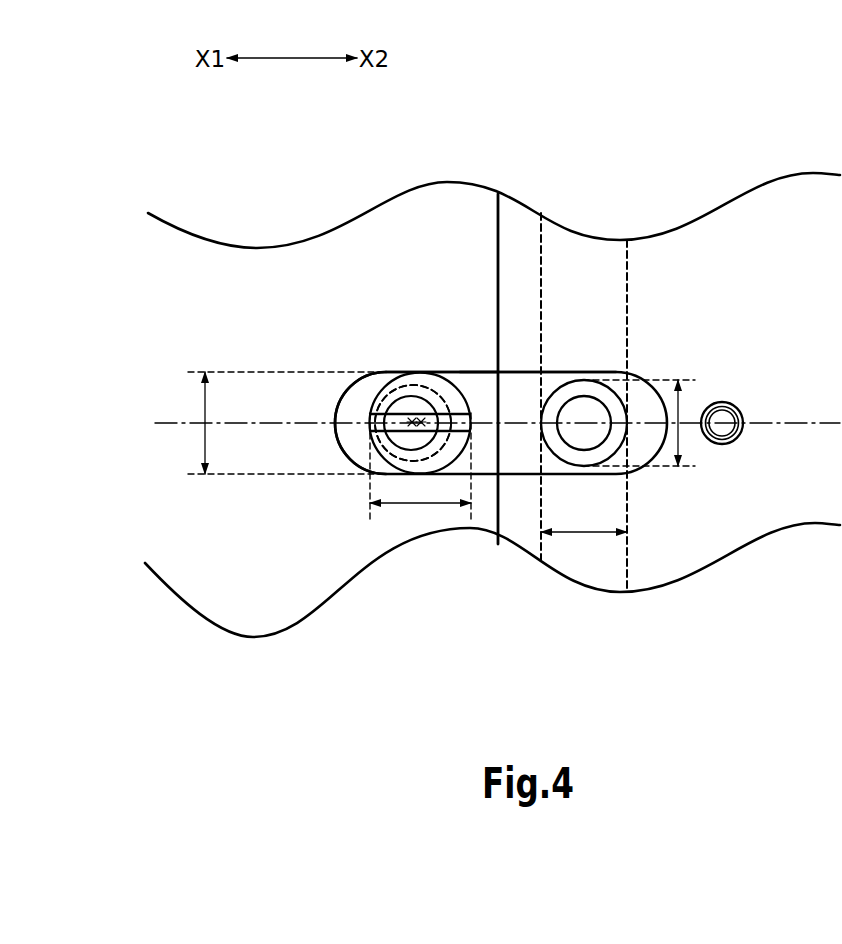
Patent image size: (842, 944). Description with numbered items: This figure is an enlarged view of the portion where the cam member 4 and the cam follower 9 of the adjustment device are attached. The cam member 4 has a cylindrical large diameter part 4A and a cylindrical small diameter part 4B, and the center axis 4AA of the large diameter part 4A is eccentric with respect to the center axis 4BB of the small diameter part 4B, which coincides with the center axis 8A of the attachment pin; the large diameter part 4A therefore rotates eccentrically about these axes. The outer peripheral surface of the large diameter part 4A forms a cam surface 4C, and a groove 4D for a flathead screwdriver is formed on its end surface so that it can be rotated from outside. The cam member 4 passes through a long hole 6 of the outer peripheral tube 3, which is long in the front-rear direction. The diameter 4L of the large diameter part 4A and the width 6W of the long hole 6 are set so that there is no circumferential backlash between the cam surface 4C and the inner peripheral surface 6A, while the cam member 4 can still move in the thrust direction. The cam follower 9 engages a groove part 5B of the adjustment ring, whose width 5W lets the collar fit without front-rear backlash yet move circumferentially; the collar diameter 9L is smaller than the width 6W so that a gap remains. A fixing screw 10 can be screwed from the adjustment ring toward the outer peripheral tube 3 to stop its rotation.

The outer peripheral tube 3 is at (253, 638).
The cam member 4 is at (370, 384).
The large diameter part 4A is at (435, 373).
The center axis of the large diameter part 4AA is at (418, 410).
The small diameter part 4B is at (362, 407).
The center axis of the small diameter part 4BB is at (407, 410).
The center axis of the attachment pin 8A is at (407, 410).
The cam surface 4C is at (450, 373).
The groove 4D is at (472, 430).
The diameter of the large diameter part 4L is at (404, 505).
The groove part 5B is at (608, 557).
The width of the groove part 5W is at (578, 535).
The long hole 6 is at (515, 392).
The inner peripheral surface of the long hole 6A is at (477, 373).
The width of the long hole 6W is at (205, 442).
The cam follower 9 is at (583, 381).
The diameter of the collar part 9L is at (680, 433).
The fixing screw 10 is at (725, 447).